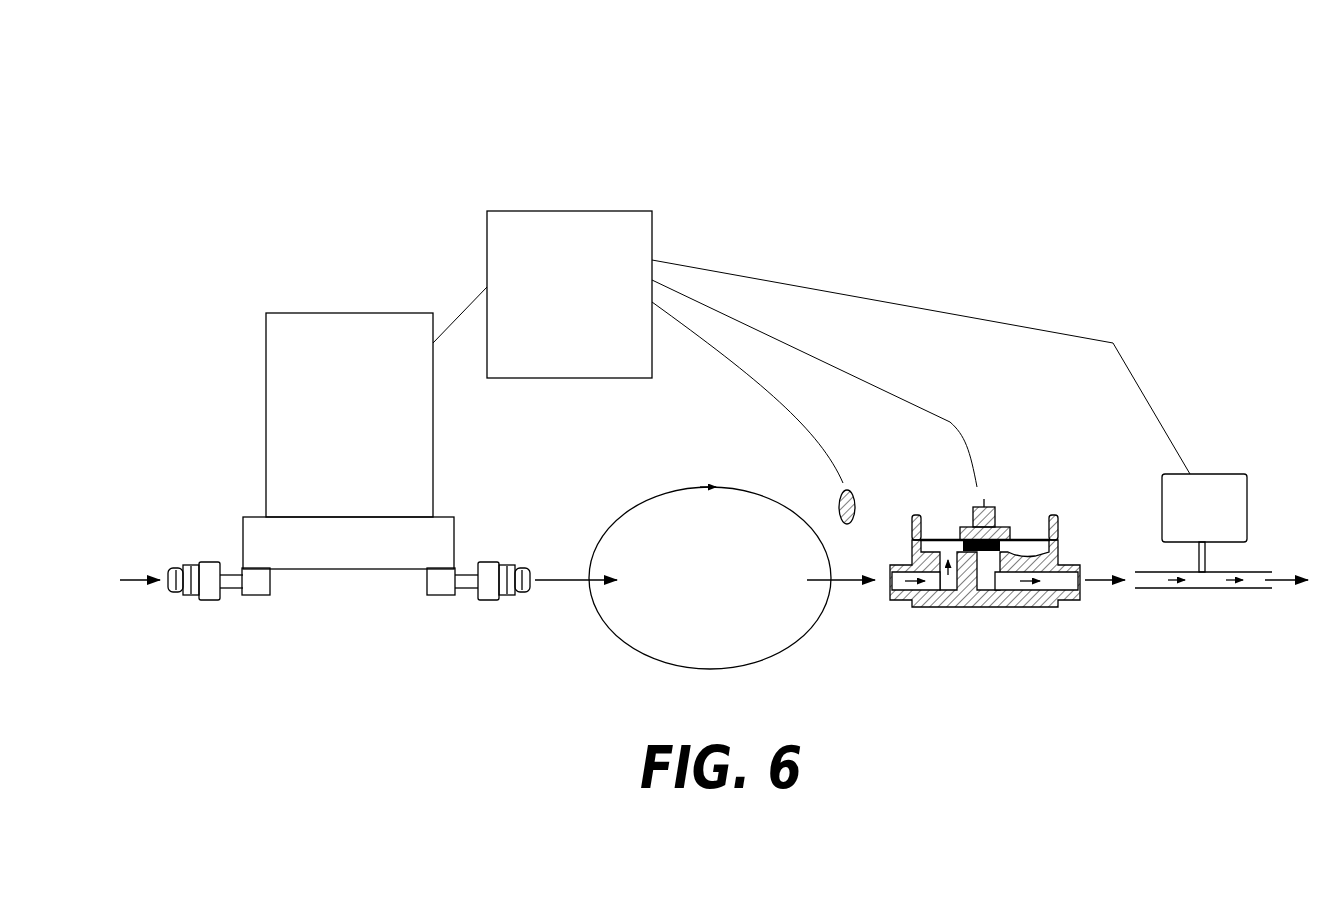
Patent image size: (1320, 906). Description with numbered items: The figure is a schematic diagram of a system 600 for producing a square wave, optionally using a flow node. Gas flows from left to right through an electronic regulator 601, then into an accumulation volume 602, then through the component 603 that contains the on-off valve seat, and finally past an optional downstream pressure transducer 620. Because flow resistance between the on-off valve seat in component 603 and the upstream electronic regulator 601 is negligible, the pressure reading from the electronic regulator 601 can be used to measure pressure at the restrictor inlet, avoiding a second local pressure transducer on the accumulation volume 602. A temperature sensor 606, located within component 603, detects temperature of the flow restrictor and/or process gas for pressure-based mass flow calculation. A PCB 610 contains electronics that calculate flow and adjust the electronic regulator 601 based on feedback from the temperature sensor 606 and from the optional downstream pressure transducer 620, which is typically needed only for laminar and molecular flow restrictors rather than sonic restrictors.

The system 600 is at (1079, 74).
The electronic regulator 601 is at (375, 365).
The accumulation volume 602 is at (721, 557).
The component containing the on-off valve seat 603 is at (1005, 643).
The temperature sensor 606 is at (874, 479).
The PCB 610 is at (583, 280).
The downstream pressure transducer 620 is at (1213, 506).